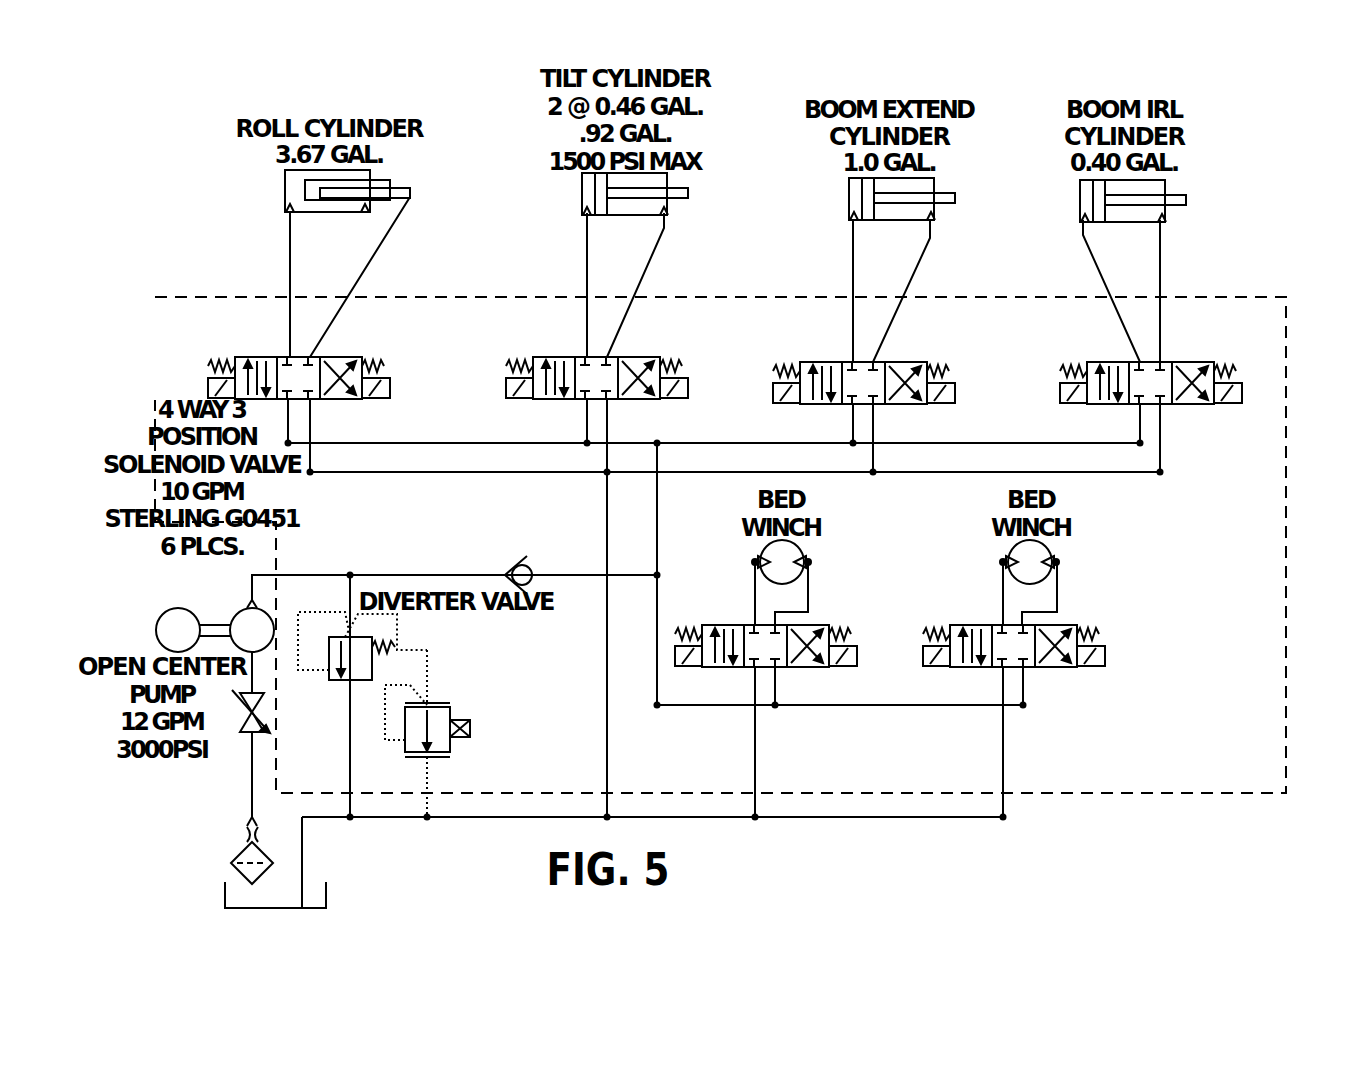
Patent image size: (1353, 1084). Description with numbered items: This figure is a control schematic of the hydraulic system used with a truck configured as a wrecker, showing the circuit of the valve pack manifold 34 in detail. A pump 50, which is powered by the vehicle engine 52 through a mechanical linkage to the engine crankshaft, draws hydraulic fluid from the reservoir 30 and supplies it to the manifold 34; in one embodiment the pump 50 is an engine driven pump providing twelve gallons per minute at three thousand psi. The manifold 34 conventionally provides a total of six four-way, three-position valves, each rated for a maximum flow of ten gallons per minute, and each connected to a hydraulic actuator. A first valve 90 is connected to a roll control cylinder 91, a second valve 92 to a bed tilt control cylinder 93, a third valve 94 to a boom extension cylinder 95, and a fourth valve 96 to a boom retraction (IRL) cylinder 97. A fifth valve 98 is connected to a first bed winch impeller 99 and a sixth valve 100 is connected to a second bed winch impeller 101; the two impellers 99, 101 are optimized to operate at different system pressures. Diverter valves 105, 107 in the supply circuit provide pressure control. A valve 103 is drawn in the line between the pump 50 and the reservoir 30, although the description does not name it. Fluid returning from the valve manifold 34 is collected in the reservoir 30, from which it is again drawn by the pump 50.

The reservoir 30 is at (328, 890).
The valve pack manifold 34 is at (1253, 297).
The pump 50 is at (246, 613).
The vehicle engine 52 is at (158, 620).
The first valve 90 is at (358, 357).
The roll control cylinder 91 is at (393, 182).
The second valve 92 is at (660, 357).
The bed tilt control cylinder 93 is at (690, 193).
The third valve 94 is at (927, 362).
The boom extension cylinder 95 is at (957, 190).
The fourth valve 96 is at (1205, 362).
The boom retraction (IRL) cylinder 97 is at (1190, 195).
The fifth valve 98 is at (822, 625).
The first bed winch impeller 99 is at (802, 550).
The sixth valve 100 is at (1073, 625).
The second bed winch impeller 101 is at (1050, 550).
The shutoff valve 103 is at (245, 735).
The diverter valve 105 is at (333, 682).
The diverter valve 107 is at (444, 705).